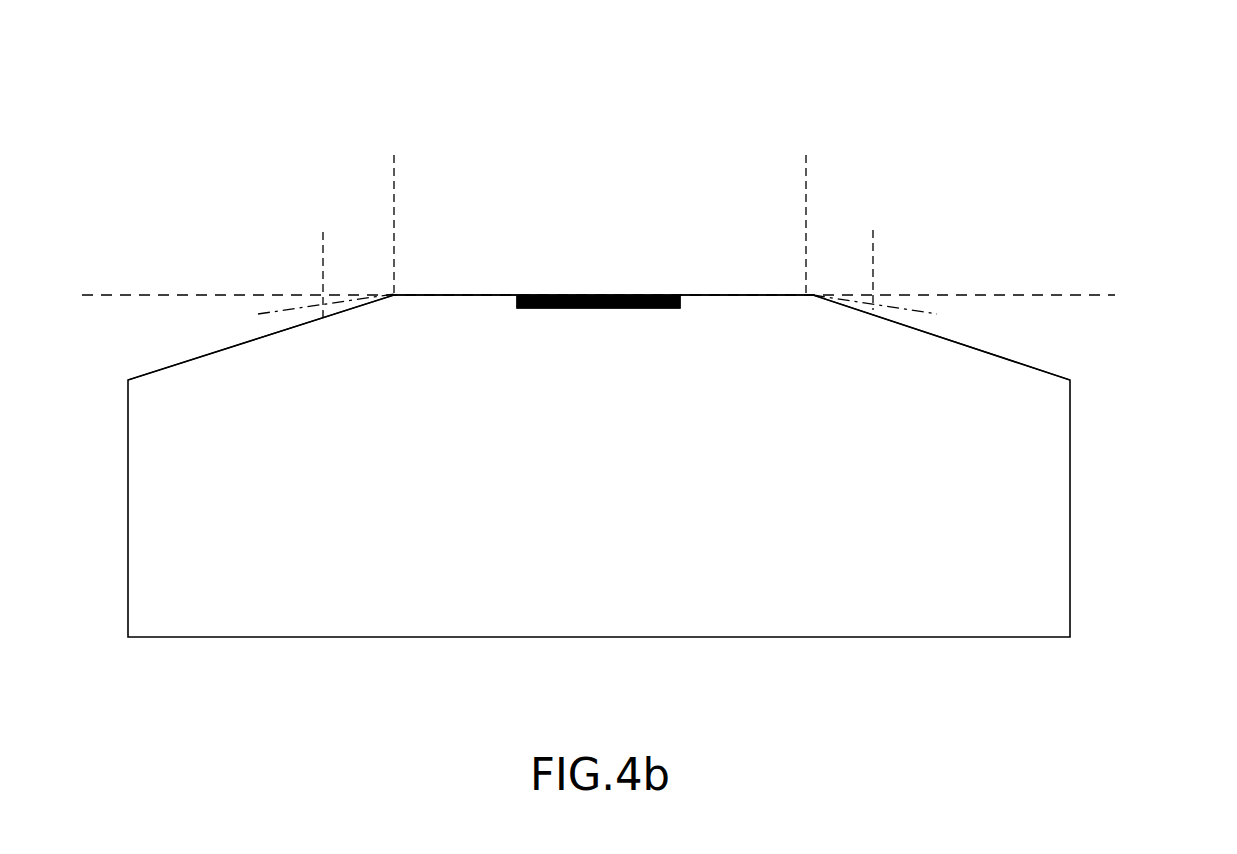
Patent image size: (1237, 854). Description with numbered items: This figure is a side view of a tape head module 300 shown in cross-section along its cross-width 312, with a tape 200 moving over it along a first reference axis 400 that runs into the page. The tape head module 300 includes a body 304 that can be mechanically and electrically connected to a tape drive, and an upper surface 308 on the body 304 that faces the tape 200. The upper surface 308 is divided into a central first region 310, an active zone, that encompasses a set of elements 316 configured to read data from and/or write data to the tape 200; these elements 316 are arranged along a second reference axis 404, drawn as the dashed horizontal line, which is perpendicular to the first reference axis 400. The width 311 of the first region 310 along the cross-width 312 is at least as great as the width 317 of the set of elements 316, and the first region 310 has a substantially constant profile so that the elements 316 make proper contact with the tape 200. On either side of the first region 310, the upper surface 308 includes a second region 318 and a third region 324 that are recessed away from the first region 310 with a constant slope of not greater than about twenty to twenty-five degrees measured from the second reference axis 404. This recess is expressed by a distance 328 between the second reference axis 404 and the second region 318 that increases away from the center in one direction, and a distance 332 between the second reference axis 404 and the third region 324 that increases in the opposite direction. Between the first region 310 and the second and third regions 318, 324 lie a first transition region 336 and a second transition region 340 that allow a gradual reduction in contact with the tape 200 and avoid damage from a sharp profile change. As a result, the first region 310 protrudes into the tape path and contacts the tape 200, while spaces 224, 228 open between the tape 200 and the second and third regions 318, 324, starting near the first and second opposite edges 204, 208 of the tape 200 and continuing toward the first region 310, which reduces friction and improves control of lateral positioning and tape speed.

The tape head module 300 is at (851, 154).
The body 304 is at (1071, 561).
The upper surface 308 is at (1028, 321).
The first region 310 is at (449, 295).
The width of the first region 311 is at (394, 166).
The cross-width of the tape head module 312 is at (1070, 681).
The elements 316 is at (618, 294).
The width of the set of elements 317 is at (680, 325).
The second region 318 is at (197, 358).
The third region 324 is at (993, 354).
The distance between the second reference axis and the second region 328 is at (149, 296).
The distance between the second reference axis and the third region 332 is at (1057, 296).
The first transition region 336 is at (361, 305).
The second transition region 340 is at (843, 300).
The tape 200 is at (886, 299).
The first edge of the tape 204 is at (275, 312).
The second edge of the tape 208 is at (940, 316).
The space 224 is at (294, 268).
The space 228 is at (932, 273).
The first reference axis 400 is at (599, 294).
The second reference axis 404 is at (110, 295).